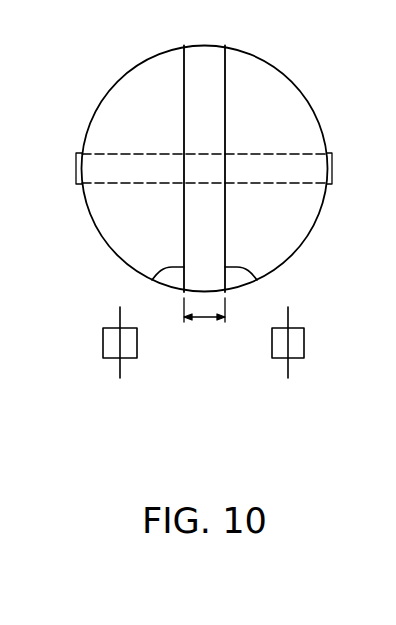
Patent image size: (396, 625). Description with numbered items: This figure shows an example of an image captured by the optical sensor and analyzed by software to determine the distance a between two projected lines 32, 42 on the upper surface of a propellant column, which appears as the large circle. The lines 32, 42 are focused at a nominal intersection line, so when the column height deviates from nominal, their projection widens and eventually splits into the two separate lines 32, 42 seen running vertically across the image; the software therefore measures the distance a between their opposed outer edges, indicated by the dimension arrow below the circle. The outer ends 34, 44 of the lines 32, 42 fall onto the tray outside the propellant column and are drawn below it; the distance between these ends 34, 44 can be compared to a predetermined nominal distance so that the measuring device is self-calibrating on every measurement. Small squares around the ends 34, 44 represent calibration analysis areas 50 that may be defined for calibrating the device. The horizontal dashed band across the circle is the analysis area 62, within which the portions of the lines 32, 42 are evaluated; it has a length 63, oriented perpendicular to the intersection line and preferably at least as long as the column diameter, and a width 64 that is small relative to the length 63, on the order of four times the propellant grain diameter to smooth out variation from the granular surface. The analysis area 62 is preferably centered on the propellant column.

The line 32 is at (258, 281).
The outer end 34 is at (288, 372).
The line 42 is at (150, 280).
The outer end 44 is at (120, 372).
The calibration analysis area 50 is at (103, 342).
The analysis area 62 is at (114, 184).
The length 63 is at (290, 152).
The width 64 is at (332, 170).
The distance a is at (205, 322).